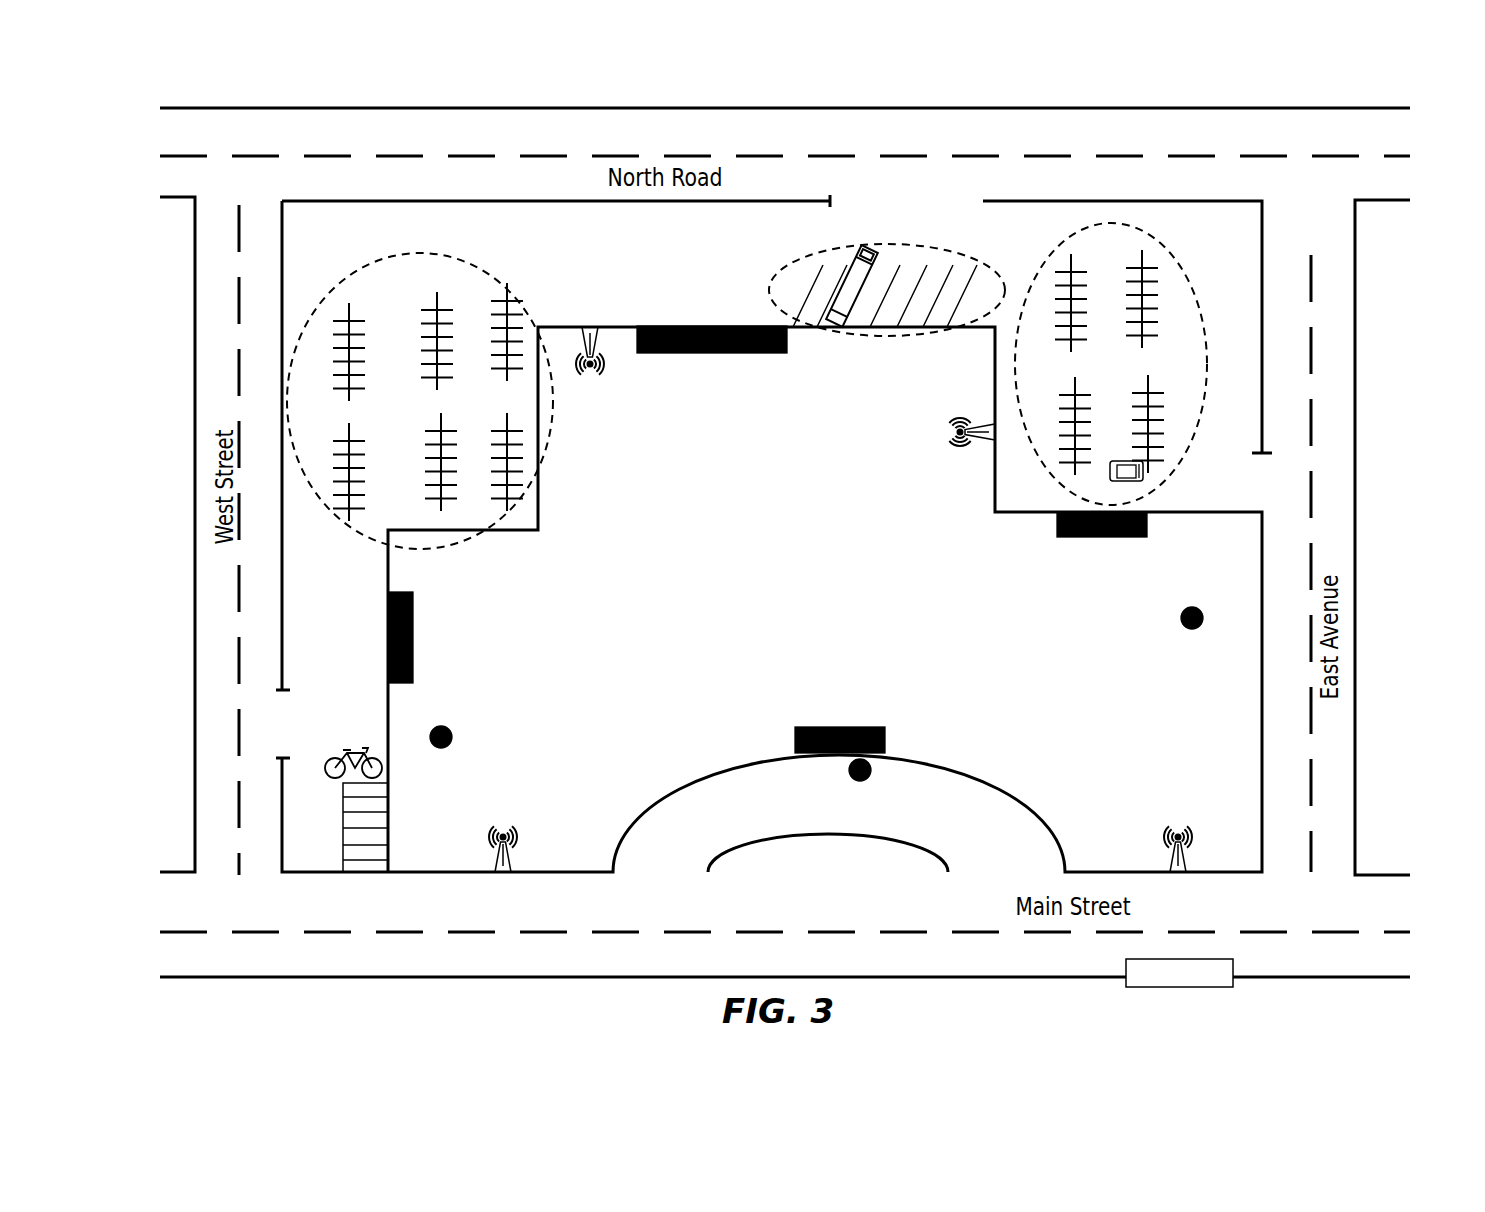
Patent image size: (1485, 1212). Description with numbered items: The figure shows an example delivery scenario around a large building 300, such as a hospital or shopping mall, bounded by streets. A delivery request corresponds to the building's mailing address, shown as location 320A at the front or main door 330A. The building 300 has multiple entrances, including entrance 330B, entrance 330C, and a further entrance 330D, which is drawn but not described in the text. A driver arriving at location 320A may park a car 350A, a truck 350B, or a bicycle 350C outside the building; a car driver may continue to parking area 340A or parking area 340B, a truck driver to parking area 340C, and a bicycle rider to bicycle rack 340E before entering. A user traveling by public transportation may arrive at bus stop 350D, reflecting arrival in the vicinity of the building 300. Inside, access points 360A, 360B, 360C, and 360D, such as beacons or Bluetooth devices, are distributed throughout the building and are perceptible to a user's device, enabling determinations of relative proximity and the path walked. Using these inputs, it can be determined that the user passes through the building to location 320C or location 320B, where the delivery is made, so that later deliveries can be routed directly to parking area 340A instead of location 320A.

The building 300 is at (774, 533).
The location 320A is at (863, 779).
The location 320B is at (1186, 610).
The location 320C is at (446, 728).
The front door 330A is at (796, 730).
The entrance 330B is at (1062, 538).
The entrance 330C is at (413, 592).
The entrance 330D is at (776, 352).
The parking area 340A is at (1159, 248).
The parking area 340B is at (474, 268).
The parking area 340C is at (937, 250).
The bicycle rack 340E is at (343, 832).
The car 350A is at (1146, 476).
The truck 350B is at (862, 250).
The bicycle 350C is at (346, 753).
The bus stop 350D is at (1233, 960).
The access point 360A is at (508, 866).
The access point 360B is at (1172, 866).
The access point 360C is at (988, 428).
The access point 360D is at (592, 338).